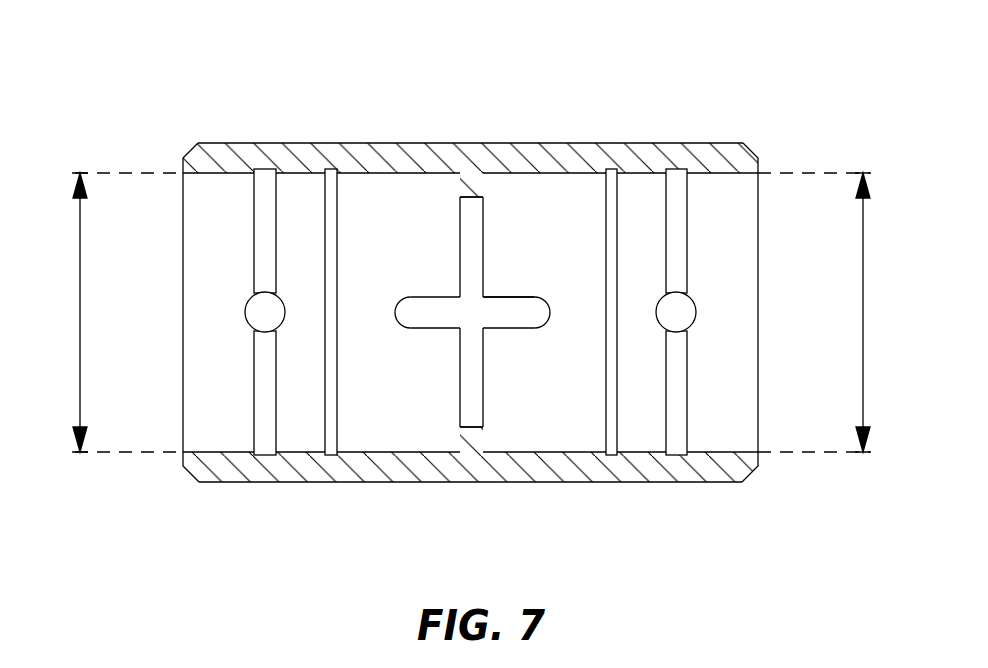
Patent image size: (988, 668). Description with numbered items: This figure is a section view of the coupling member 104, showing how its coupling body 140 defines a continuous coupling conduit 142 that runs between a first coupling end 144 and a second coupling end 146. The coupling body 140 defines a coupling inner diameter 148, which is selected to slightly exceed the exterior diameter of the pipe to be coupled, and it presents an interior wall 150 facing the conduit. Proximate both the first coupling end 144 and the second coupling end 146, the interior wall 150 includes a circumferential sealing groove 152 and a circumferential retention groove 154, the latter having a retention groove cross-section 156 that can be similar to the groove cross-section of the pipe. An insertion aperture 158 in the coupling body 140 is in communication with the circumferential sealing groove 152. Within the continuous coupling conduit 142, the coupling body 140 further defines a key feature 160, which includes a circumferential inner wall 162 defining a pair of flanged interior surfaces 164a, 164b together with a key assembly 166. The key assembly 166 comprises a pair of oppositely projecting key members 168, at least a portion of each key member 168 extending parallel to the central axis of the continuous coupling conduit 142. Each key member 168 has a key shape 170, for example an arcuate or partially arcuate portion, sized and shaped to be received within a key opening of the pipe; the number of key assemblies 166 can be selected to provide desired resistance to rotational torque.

The coupling member 104 is at (635, 55).
The coupling body 140 is at (278, 143).
The continuous coupling conduit 142 is at (420, 417).
The first coupling end 144 is at (183, 460).
The second coupling end 146 is at (758, 466).
The coupling inner diameter 148 is at (80, 312).
The interior wall 150 is at (508, 495).
The circumferential sealing groove 152 is at (331, 420).
The circumferential retention groove 154 is at (260, 420).
The retention groove cross-section 156 is at (262, 197).
The insertion aperture 158 is at (262, 312).
The key feature 160 is at (458, 263).
The circumferential inner wall 162 is at (477, 244).
The flanged interior surface 164a is at (460, 190).
The flanged interior surface 164b is at (483, 191).
The key assembly 166 is at (512, 295).
The key member 168 is at (413, 315).
The key shape 170 is at (407, 300).